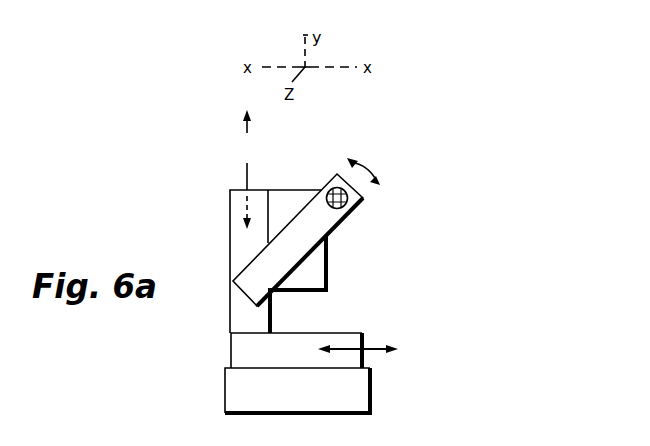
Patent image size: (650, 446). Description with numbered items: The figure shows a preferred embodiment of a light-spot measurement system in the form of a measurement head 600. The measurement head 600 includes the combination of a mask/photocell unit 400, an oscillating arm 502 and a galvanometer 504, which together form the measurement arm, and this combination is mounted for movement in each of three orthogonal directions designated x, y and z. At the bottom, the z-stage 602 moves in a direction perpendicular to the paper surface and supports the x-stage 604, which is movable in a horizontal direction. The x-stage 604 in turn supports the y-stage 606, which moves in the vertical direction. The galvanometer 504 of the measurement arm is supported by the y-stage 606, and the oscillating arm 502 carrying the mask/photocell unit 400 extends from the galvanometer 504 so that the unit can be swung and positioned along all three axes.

The measurement head 600 is at (316, 173).
The y-stage 606 is at (229, 217).
The x-stage 604 is at (362, 334).
The z-stage 602 is at (372, 387).
The oscillating arm 502 is at (320, 227).
The galvanometer 504 is at (317, 277).
The mask/photocell unit 400 is at (355, 203).